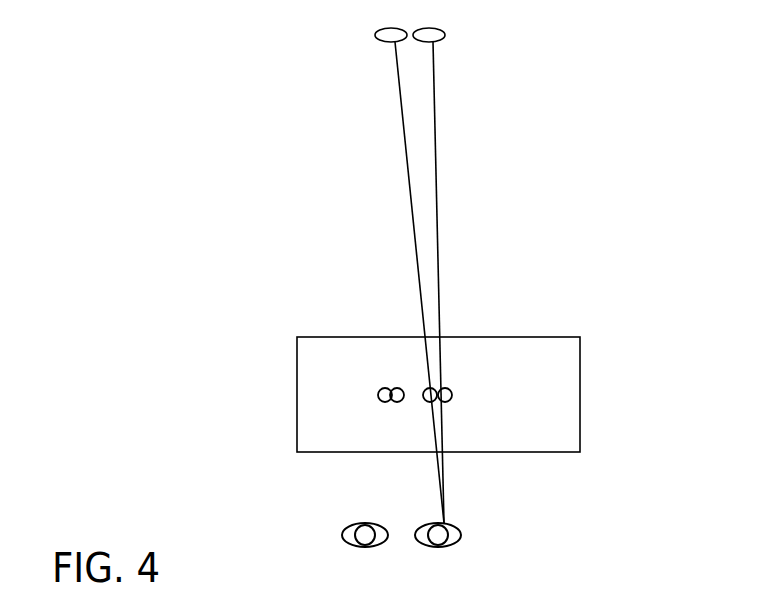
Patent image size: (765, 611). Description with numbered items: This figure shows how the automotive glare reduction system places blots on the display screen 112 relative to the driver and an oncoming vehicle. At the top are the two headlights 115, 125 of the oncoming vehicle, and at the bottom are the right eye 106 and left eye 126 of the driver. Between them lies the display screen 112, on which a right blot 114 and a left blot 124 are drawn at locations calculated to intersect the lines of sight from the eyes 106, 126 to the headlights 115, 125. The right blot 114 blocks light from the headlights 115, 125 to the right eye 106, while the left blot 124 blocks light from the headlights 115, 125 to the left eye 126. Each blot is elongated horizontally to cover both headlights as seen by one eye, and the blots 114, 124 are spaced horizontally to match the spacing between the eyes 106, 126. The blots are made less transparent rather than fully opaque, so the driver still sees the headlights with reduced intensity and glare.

The right eye 106 is at (477, 532).
The display screen 112 is at (588, 398).
The right blot 114 is at (452, 388).
The headlight 115 is at (455, 40).
The left blot 124 is at (387, 383).
The headlight 125 is at (368, 47).
The left eye 126 is at (323, 523).